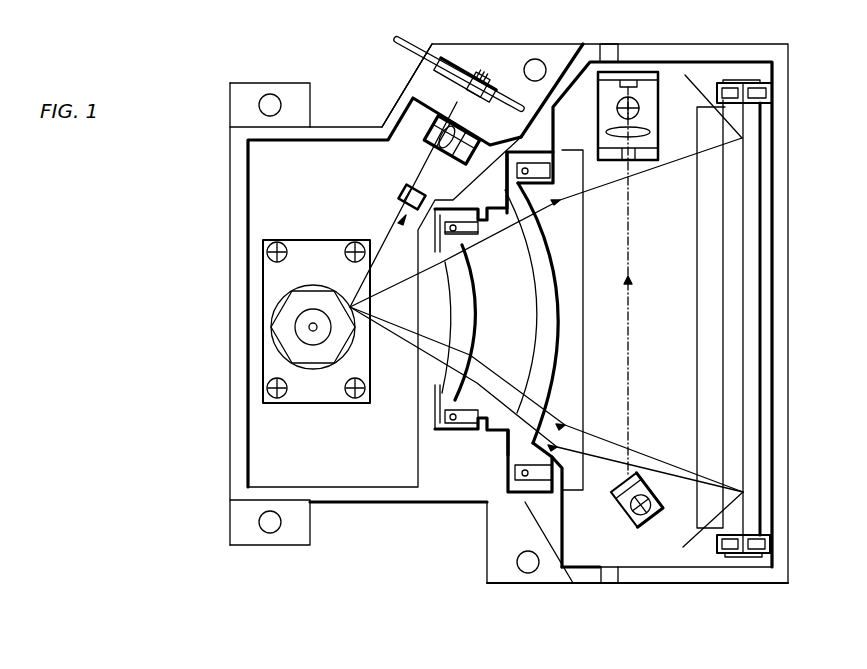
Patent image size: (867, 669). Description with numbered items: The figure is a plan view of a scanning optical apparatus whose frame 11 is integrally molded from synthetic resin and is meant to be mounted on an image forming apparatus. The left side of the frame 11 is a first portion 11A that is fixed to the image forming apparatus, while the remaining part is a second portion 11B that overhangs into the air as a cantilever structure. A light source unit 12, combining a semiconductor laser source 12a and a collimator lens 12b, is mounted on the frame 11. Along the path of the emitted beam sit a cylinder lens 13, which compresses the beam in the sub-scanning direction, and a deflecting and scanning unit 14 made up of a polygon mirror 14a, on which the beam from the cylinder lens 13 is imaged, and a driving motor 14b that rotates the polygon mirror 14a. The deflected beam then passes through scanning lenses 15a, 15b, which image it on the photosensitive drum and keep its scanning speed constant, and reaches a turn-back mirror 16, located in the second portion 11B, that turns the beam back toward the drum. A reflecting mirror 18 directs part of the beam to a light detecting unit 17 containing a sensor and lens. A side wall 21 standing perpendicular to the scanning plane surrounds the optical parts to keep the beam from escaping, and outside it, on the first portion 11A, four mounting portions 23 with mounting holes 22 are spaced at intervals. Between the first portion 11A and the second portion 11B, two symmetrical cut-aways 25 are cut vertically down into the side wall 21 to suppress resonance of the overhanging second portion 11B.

The frame 11 is at (229, 203).
The first portion 11A is at (356, 503).
The second portion 11B is at (705, 585).
The light source unit 12 is at (465, 64).
The semiconductor laser source 12a is at (464, 81).
The collimator lens 12b is at (440, 133).
The cylinder lens 13 is at (403, 190).
The deflecting and scanning unit 14 is at (265, 342).
The polygon mirror 14a is at (290, 305).
The driving motor 14b is at (275, 363).
The scanning lens 15a is at (470, 356).
The scanning lens 15b is at (546, 299).
The turn-back mirror 16 is at (749, 557).
The light detecting unit 17 is at (643, 72).
The reflecting mirror 18 is at (611, 492).
The side wall 21 is at (235, 435).
The mounting holes 22 is at (272, 97).
The mounting portions 23 is at (243, 89).
The cut-aways 25 is at (610, 50).